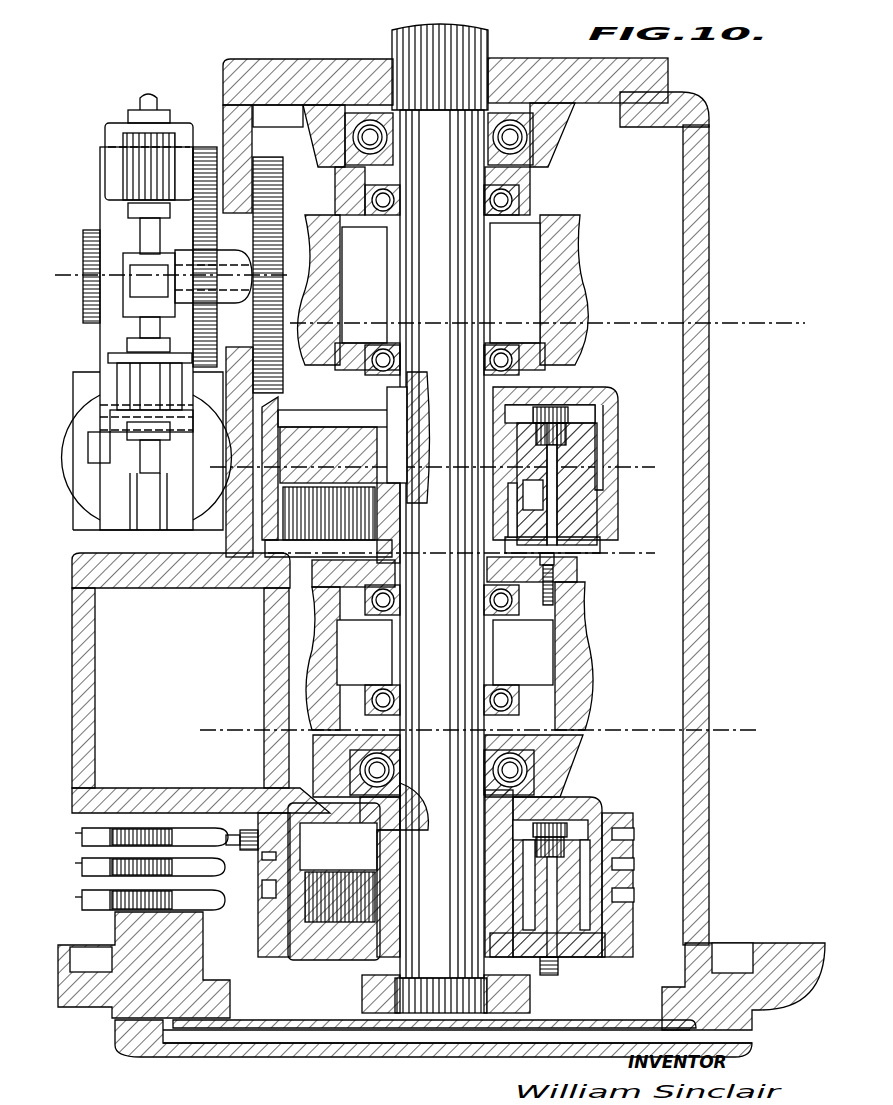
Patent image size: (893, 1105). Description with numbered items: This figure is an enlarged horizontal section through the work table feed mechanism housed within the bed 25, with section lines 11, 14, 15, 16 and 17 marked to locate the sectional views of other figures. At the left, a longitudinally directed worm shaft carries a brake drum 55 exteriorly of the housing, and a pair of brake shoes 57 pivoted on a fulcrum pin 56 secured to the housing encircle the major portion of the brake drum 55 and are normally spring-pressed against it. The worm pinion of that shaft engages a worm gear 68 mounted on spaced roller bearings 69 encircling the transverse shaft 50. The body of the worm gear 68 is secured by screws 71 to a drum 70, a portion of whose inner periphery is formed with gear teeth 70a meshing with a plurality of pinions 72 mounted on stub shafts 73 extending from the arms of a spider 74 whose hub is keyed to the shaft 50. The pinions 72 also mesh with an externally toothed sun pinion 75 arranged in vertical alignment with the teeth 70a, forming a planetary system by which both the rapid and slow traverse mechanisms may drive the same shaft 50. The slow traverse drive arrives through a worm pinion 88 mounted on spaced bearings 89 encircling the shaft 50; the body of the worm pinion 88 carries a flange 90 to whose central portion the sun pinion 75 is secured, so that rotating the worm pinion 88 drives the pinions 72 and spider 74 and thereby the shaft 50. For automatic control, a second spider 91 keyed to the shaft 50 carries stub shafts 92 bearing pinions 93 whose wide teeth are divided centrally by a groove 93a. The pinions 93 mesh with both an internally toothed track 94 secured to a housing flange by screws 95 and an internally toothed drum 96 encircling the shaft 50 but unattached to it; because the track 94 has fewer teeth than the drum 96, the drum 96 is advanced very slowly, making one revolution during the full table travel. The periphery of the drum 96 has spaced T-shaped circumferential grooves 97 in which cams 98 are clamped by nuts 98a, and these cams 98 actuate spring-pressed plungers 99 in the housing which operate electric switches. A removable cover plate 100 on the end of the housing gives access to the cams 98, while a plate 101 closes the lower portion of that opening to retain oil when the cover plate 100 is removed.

The section line 11- 11 is at (65, 312).
The section line 14- 14 is at (225, 700).
The section line 15- 15 is at (258, 440).
The section line 16- 16 is at (258, 515).
The section line 17- 17 is at (190, 900).
The bed 25 is at (709, 836).
The shaft 50 is at (440, 518).
The brake drum 55 is at (105, 210).
The fulcrum pin 56 is at (118, 268).
The brake shoes 57 is at (118, 125).
The worm gear 68 is at (575, 248).
The roller bearings 69 is at (508, 200).
The drum 70 is at (575, 395).
The gear teeth 70a is at (620, 565).
The screws 71 is at (355, 467).
The pinions 72 is at (565, 575).
The stub shafts 73 is at (560, 470).
The spider 74 is at (335, 445).
The sun pinion 75 is at (385, 525).
The worm pinion 88 is at (585, 670).
The bearings 89 is at (503, 693).
The flange 90 is at (560, 585).
The second spider 91 is at (475, 815).
The stub shafts 92 is at (575, 960).
The pinions 93 is at (585, 880).
The groove 93a is at (570, 945).
The internally toothed track 94 is at (335, 873).
The screws 95 is at (570, 775).
The drum 96 is at (268, 937).
The circumferential grooves 97 is at (270, 900).
The cams 98 is at (265, 838).
The nuts 98a is at (255, 836).
The spring-pressed plungers 99 is at (85, 897).
The removable cover plate 100 is at (138, 1058).
The plate 101 is at (322, 1001).